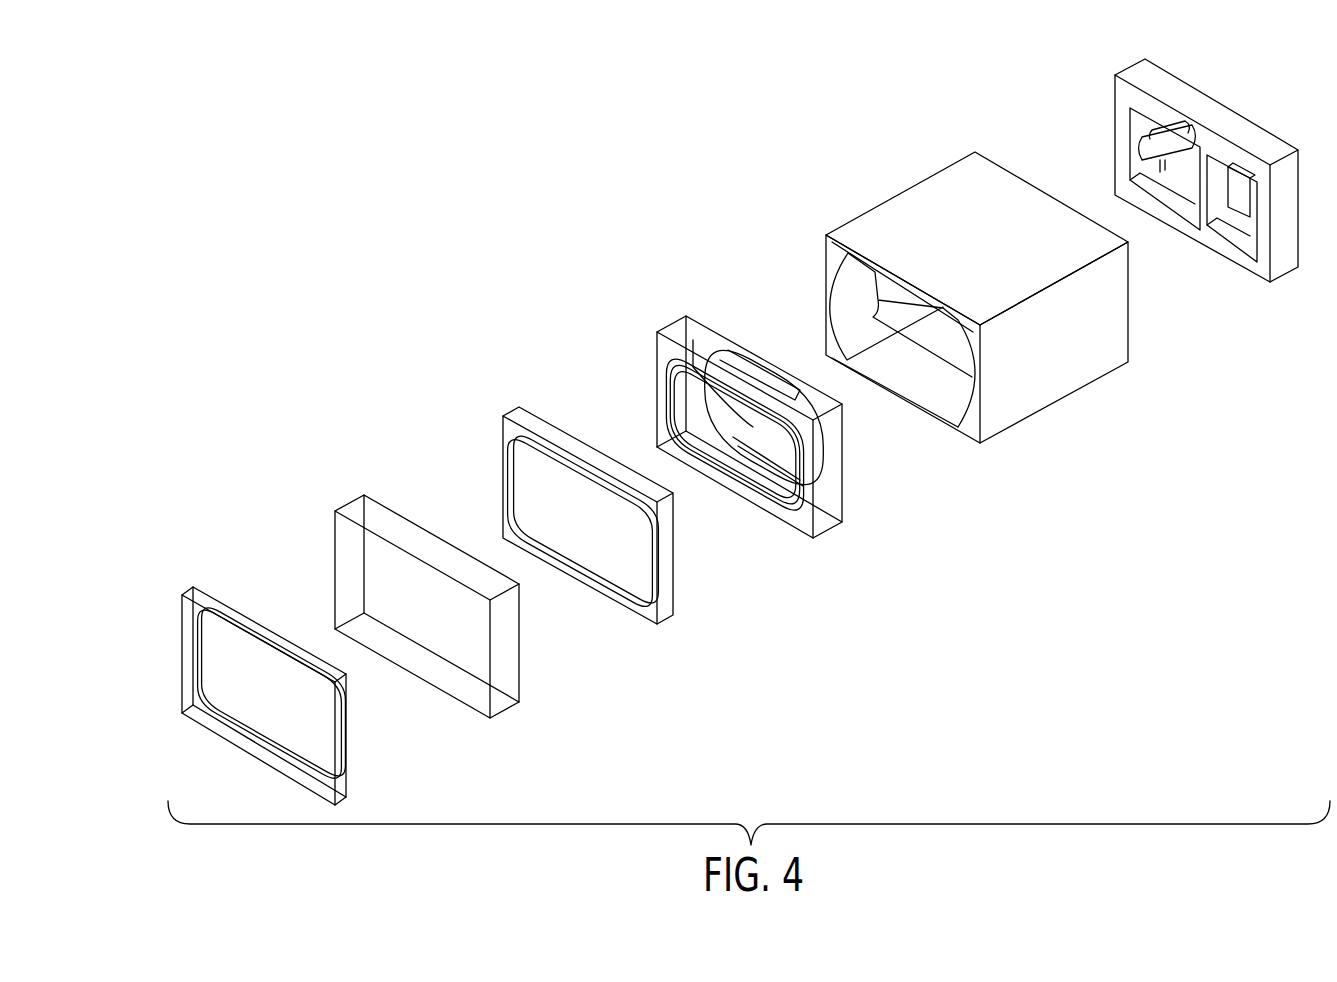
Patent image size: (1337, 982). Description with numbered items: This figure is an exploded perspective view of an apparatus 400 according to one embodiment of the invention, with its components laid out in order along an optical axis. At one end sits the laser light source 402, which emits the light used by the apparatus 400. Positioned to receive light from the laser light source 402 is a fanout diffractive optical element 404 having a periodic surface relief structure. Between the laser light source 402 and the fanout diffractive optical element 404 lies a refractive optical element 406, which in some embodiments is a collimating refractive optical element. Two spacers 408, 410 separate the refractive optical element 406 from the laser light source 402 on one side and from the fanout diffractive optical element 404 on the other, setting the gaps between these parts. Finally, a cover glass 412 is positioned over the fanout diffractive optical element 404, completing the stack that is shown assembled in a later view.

The apparatus 400 is at (358, 221).
The laser light source 402 is at (1088, 108).
The fanout diffractive optical element 404 is at (331, 483).
The refractive optical element 406 is at (649, 306).
The spacer 408 is at (889, 166).
The spacer 410 is at (500, 391).
The cover glass 412 is at (171, 573).